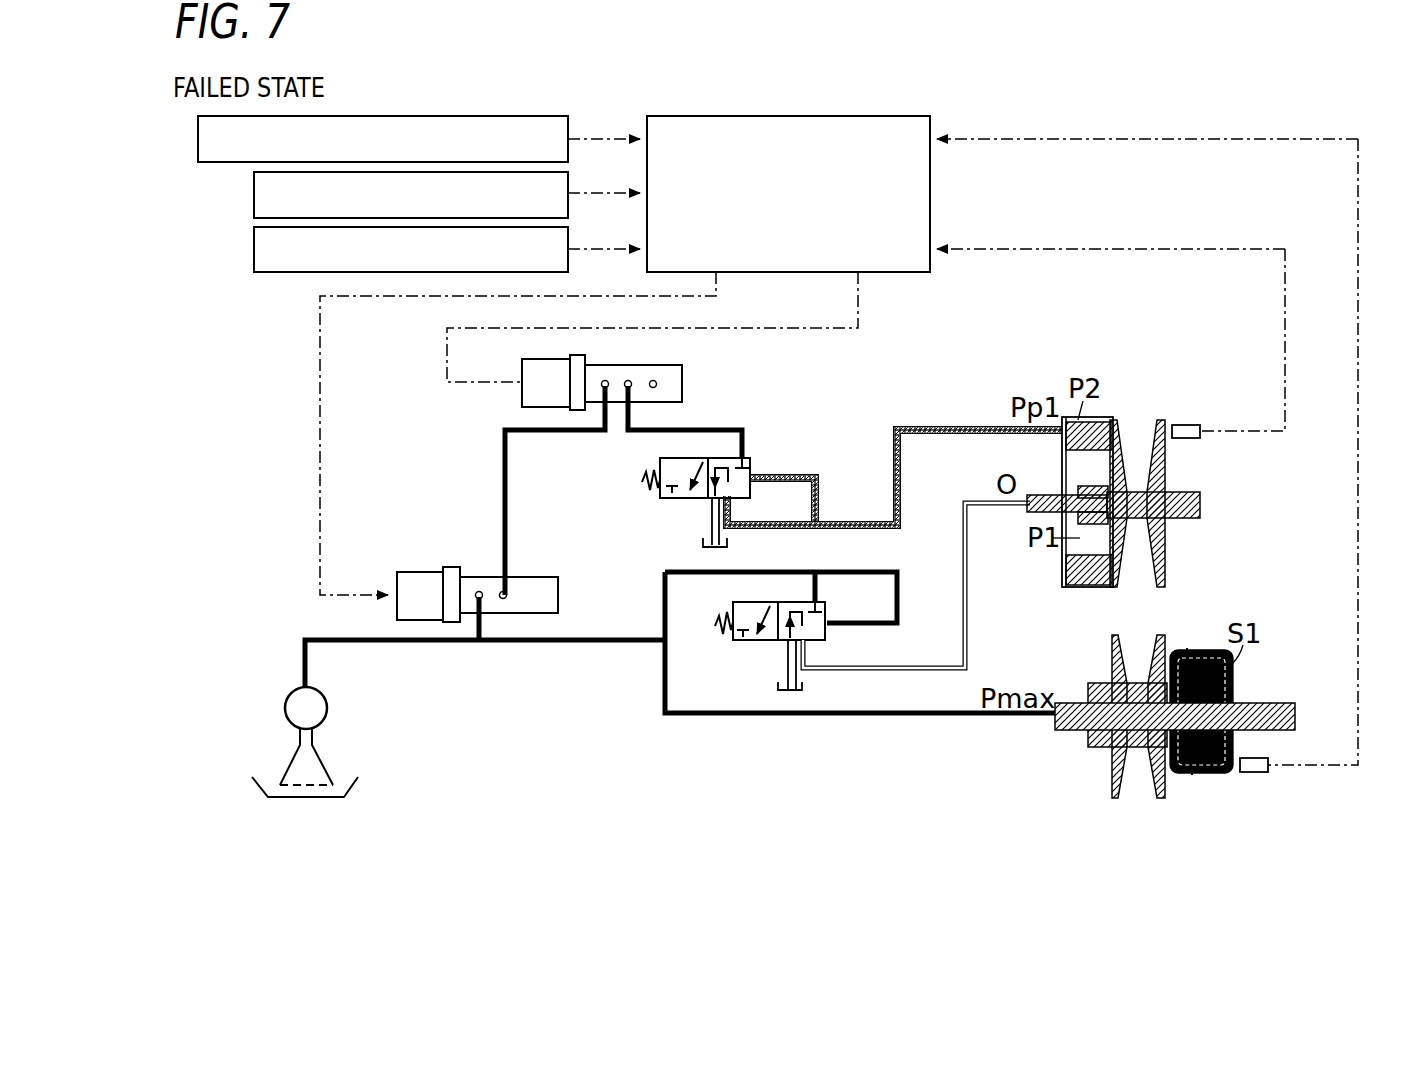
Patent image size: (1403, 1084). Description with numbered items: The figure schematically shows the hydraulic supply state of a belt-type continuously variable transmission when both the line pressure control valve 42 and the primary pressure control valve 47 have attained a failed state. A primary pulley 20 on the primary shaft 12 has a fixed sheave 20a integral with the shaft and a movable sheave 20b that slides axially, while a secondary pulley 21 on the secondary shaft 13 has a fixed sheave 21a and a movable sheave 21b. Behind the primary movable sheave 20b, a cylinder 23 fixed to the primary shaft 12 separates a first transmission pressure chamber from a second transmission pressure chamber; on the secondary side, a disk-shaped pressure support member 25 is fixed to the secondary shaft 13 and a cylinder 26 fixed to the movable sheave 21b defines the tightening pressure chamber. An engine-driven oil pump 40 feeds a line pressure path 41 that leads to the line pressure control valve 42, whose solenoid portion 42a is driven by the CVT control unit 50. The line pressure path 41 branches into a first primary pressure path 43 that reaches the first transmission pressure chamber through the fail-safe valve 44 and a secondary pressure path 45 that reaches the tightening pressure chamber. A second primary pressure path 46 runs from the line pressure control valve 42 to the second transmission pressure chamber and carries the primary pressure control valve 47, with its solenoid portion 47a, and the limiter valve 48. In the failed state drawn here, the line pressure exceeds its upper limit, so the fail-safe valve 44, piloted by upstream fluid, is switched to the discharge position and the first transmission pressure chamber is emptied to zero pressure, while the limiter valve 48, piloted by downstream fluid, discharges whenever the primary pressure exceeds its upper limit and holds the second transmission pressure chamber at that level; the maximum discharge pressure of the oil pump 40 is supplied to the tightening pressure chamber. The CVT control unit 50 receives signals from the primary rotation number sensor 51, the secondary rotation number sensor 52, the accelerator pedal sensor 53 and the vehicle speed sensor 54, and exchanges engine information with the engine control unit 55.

The primary shaft 12 is at (1200, 503).
The secondary shaft 13 is at (1295, 717).
The primary pulley 20 is at (1142, 458).
The fixed sheave 20a is at (1161, 424).
The movable sheave 20b is at (1115, 424).
The secondary pulley 21 is at (1140, 759).
The fixed sheave 21a is at (1116, 800).
The movable sheave 21b is at (1166, 738).
The cylinder 23 is at (1055, 565).
The pressure support member 25 is at (1233, 685).
The cylinder 26 is at (1185, 650).
The oil pump 40 is at (298, 710).
The line pressure path 41 is at (428, 642).
The line pressure control valve 42 is at (524, 579).
The solenoid portion 42a is at (442, 590).
The first primary pressure path 43 is at (700, 578).
The fail-safe valve 44 is at (785, 646).
The secondary pressure path 45 is at (783, 715).
The second primary pressure path 46 is at (505, 498).
The primary pressure control valve 47 is at (616, 371).
The solenoid portion 47a is at (546, 380).
The limiter valve 48 is at (700, 507).
The CVT control unit 50 is at (930, 193).
The primary rotation number sensor 51 is at (1186, 424).
The secondary rotation number sensor 52 is at (1254, 773).
The accelerator pedal sensor 53 is at (198, 139).
The vehicle speed sensor 54 is at (254, 194).
The engine control unit 55 is at (254, 250).